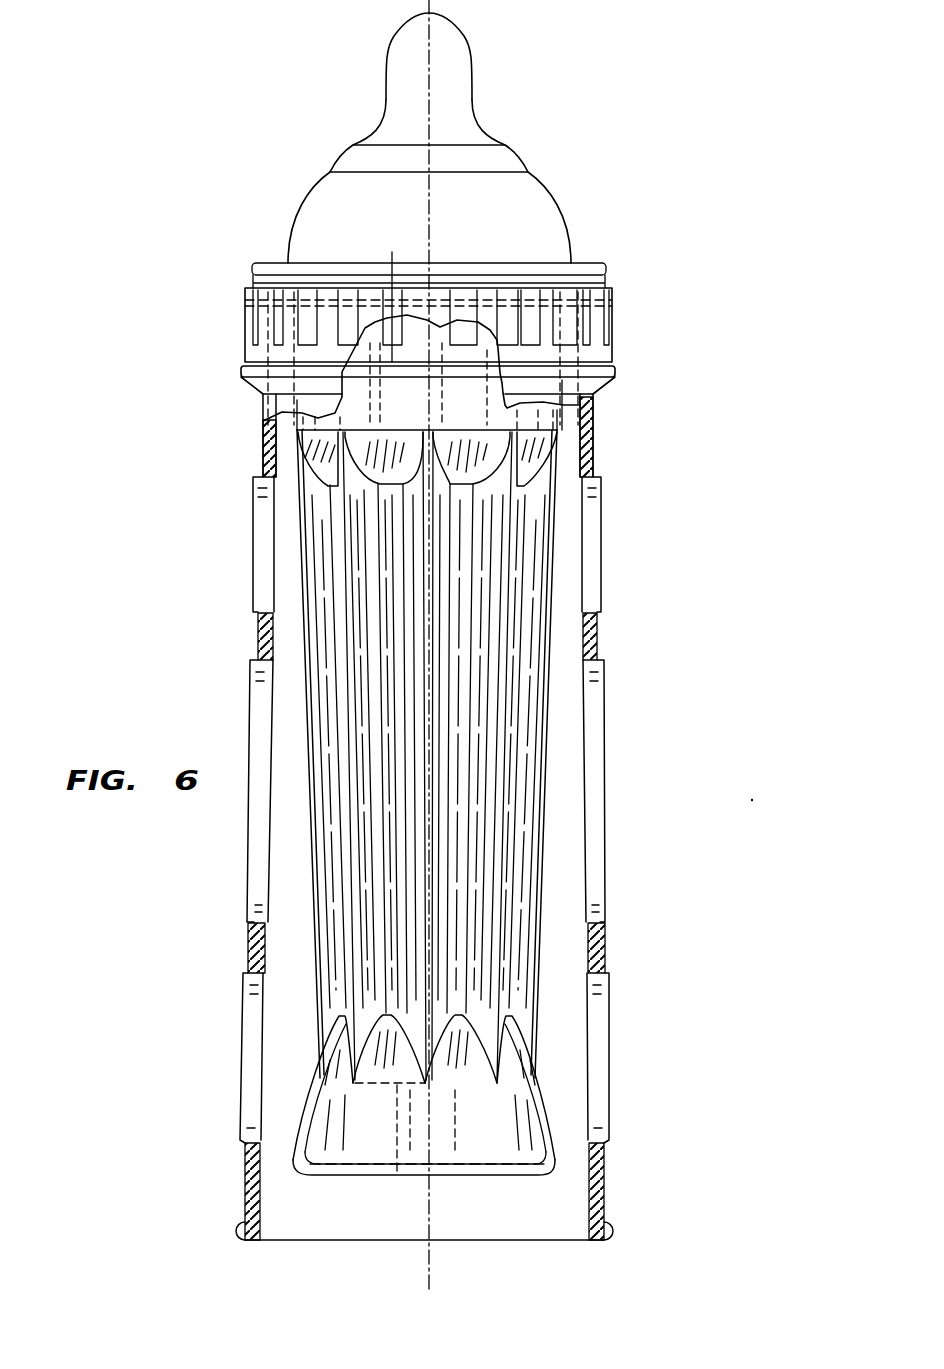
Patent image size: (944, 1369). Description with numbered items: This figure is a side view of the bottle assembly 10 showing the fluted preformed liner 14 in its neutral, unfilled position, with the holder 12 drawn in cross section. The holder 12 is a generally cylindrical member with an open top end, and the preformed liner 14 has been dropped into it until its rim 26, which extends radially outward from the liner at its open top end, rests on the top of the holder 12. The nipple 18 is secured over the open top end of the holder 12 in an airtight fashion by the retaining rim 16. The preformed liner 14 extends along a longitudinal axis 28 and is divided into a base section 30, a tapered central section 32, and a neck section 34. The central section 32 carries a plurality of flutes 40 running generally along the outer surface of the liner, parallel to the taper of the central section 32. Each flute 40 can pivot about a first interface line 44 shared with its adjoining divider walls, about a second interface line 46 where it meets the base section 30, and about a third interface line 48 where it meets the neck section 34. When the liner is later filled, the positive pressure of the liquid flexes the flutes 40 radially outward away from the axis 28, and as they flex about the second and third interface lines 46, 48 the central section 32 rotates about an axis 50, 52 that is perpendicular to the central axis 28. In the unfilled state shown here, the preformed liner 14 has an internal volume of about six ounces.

The bottle assembly 10 is at (214, 207).
The holder 12 is at (449, 817).
The preformed liner 14 is at (303, 861).
The retaining rim 16 is at (615, 326).
The nipple 18 is at (478, 70).
The rim 26 is at (550, 292).
The longitudinal axis 28 is at (429, 1262).
The base section 30 is at (483, 1150).
The central section 32 is at (528, 745).
The neck section 34 is at (392, 252).
The flutes 40 is at (489, 755).
The first interface line 44 is at (430, 592).
The second interface line 46 is at (505, 470).
The third interface line 48 is at (500, 1047).
The axis 50 is at (398, 1176).
The axis 52 is at (458, 430).